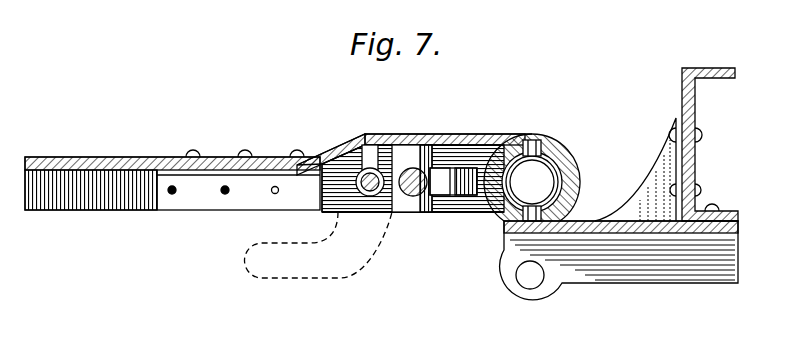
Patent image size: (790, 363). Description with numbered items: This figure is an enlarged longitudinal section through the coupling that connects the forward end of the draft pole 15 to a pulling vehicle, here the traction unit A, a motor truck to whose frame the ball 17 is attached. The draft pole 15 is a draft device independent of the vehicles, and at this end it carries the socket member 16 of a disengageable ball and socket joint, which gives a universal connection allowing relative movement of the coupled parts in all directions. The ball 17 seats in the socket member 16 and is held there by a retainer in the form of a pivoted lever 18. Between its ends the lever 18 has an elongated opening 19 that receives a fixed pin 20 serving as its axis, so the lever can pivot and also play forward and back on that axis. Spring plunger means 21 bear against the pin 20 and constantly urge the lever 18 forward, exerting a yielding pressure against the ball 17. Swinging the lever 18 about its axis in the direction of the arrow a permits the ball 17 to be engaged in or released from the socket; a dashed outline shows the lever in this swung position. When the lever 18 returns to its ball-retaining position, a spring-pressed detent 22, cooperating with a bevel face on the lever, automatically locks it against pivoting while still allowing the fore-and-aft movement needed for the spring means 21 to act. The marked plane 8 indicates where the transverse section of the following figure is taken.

The draft pole 15 is at (115, 158).
The socket member 16 is at (497, 135).
The ball 17 is at (562, 160).
The pivoted lever 18 is at (437, 170).
The elongated opening 19 is at (392, 165).
The fixed pin 20 is at (413, 170).
The spring plunger means 21 is at (466, 196).
The spring-pressed detent 22 is at (374, 197).
The section line 8— 8 is at (369, 128).
The traction unit A is at (705, 68).
The arrow a is at (250, 300).